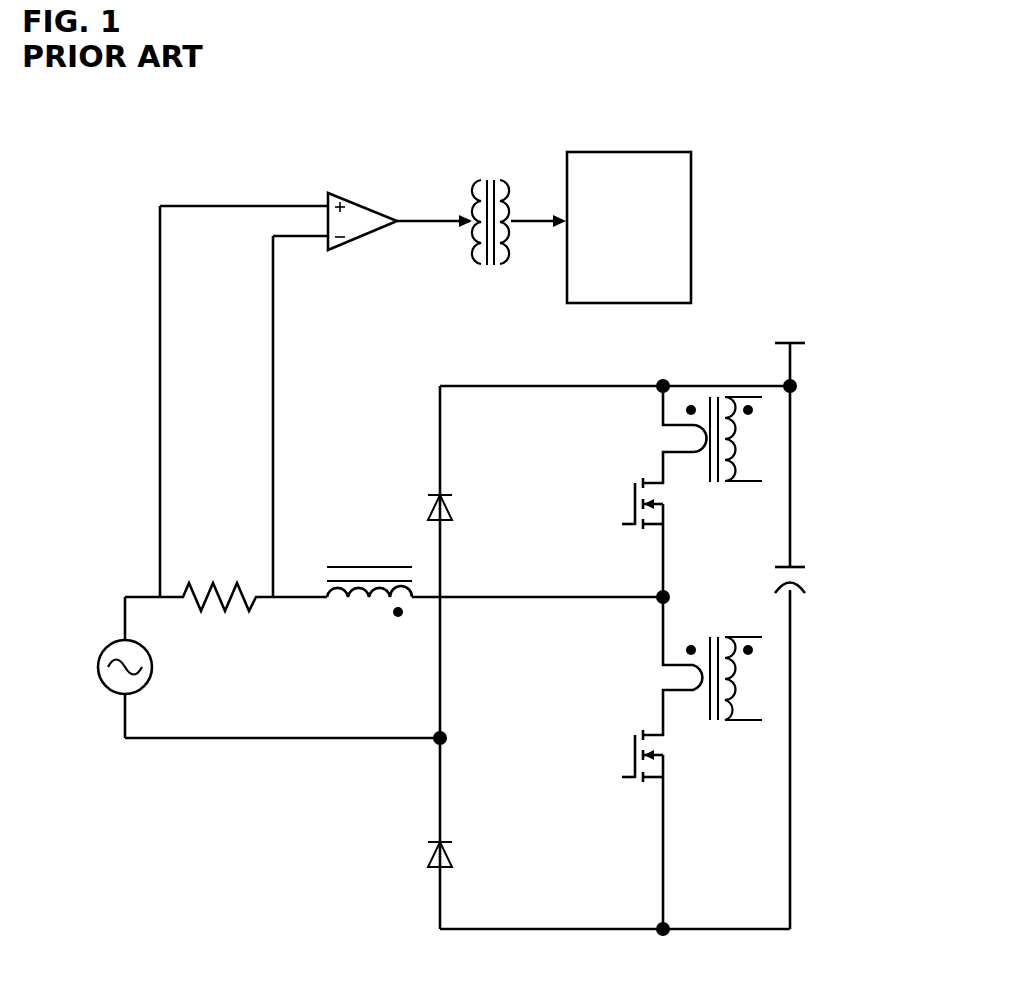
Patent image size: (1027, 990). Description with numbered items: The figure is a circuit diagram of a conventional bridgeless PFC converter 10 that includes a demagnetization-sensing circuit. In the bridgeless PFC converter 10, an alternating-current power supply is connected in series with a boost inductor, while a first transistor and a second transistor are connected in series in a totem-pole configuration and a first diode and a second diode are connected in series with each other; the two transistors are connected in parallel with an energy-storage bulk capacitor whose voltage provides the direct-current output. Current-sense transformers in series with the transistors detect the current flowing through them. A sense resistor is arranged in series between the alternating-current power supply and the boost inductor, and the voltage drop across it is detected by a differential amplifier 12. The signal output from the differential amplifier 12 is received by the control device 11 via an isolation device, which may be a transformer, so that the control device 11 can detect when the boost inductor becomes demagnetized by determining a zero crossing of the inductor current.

The bridgeless PFC converter 10 is at (111, 117).
The control device 11 is at (629, 210).
The differential amplifier 12 is at (362, 205).